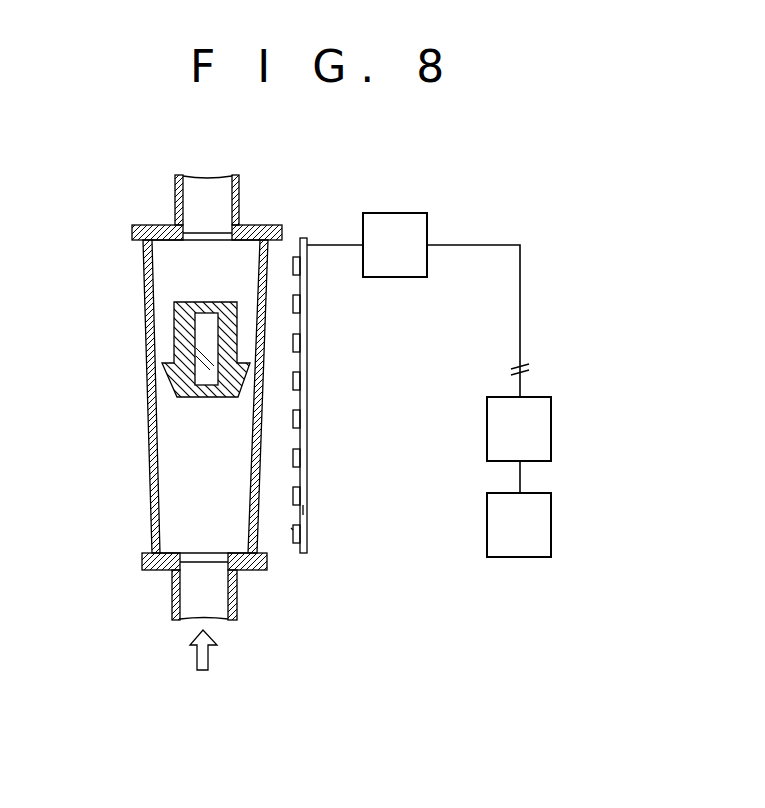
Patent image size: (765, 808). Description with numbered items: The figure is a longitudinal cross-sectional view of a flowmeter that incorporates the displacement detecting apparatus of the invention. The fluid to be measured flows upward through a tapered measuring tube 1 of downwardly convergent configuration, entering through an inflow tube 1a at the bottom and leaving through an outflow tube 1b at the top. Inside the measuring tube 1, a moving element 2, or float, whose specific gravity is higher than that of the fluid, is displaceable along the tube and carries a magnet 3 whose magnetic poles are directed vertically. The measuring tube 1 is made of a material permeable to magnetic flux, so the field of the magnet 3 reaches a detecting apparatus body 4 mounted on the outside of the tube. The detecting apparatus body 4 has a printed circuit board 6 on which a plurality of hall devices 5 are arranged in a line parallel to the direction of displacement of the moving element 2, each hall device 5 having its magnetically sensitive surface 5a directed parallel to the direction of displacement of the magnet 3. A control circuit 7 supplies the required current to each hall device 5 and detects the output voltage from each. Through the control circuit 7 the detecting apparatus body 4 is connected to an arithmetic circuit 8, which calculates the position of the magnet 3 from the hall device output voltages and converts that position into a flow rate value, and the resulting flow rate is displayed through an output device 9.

The measuring tube 1 is at (145, 292).
The inflow tube 1a is at (172, 600).
The outflow tube 1b is at (177, 205).
The moving element 2 is at (185, 385).
The magnet 3 is at (195, 345).
The detecting apparatus body 4 is at (307, 231).
The hall device 5 is at (298, 380).
The magnetically sensitive surface 5a is at (291, 528).
The printed circuit board 6 is at (303, 513).
The control circuit 7 is at (412, 212).
The arithmetic circuit 8 is at (551, 413).
The output device 9 is at (551, 513).